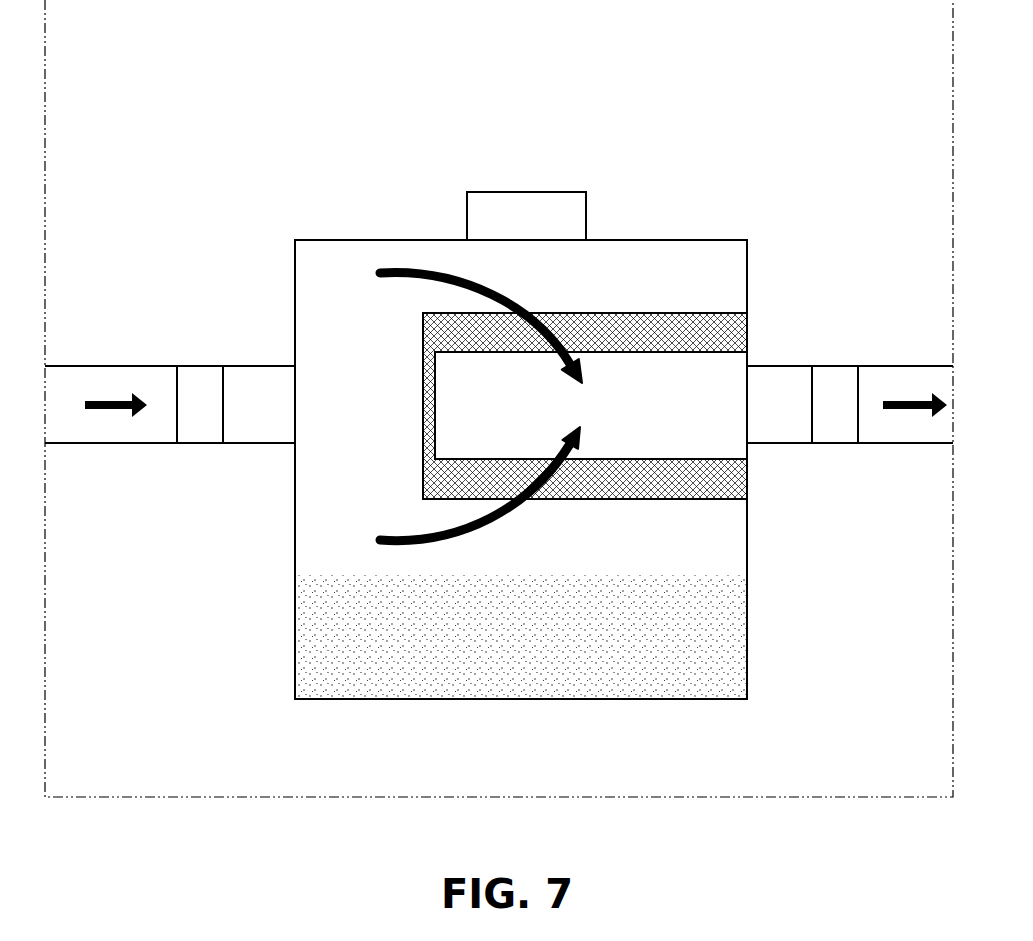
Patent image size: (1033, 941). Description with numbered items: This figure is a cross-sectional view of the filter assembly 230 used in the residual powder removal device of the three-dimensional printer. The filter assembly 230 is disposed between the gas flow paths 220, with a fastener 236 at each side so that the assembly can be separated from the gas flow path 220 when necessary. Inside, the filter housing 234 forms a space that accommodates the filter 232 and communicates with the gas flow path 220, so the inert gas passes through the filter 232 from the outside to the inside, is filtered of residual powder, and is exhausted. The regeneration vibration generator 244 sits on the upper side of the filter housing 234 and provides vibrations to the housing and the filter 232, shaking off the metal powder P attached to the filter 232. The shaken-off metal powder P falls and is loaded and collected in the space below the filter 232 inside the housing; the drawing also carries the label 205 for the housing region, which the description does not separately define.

The filter assembly 230 is at (860, 82).
The regeneration vibration generator 244 is at (570, 190).
The filter housing 234 is at (666, 240).
The filter 232 is at (698, 322).
The gas flow path 220 is at (98, 365).
The fastener 236 is at (200, 365).
The chamber 205 is at (313, 537).
The metal powder P is at (325, 638).